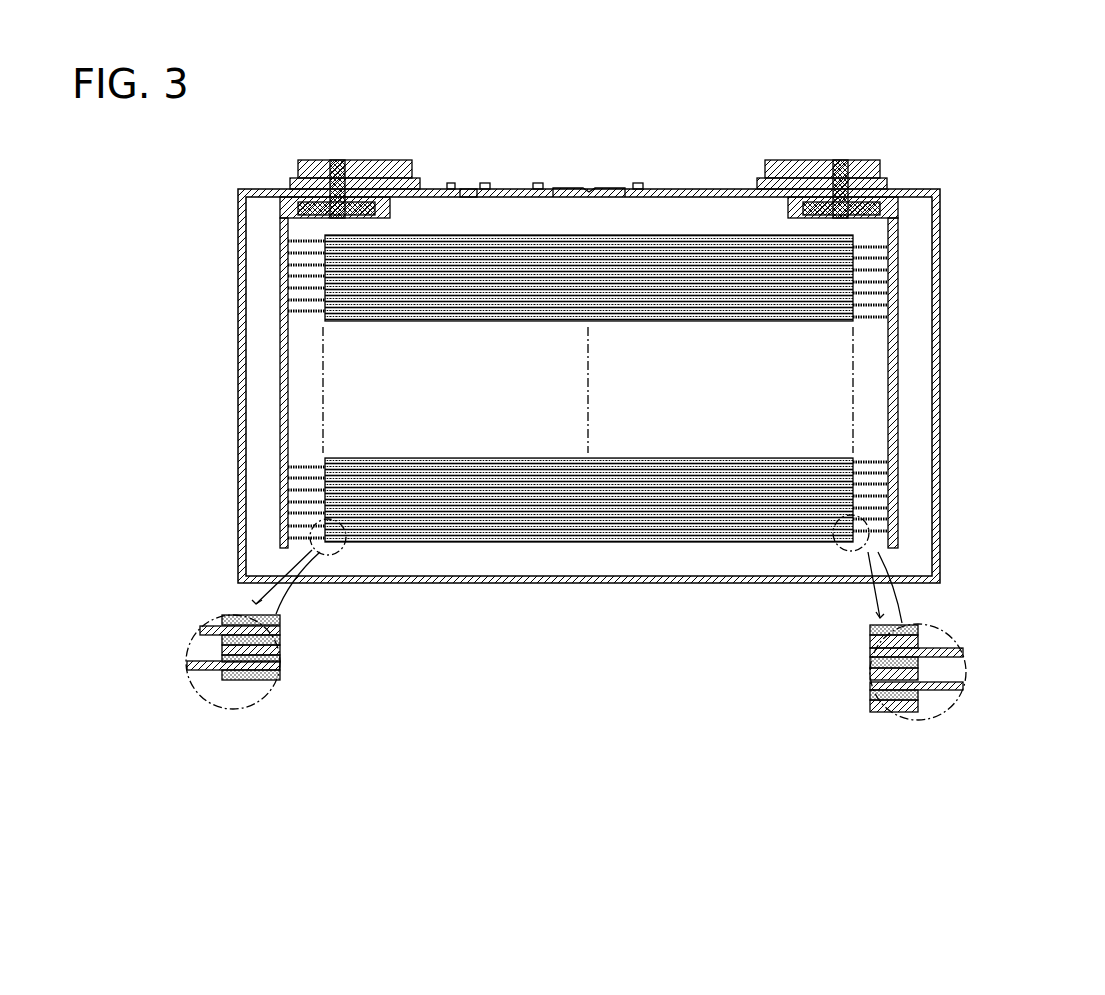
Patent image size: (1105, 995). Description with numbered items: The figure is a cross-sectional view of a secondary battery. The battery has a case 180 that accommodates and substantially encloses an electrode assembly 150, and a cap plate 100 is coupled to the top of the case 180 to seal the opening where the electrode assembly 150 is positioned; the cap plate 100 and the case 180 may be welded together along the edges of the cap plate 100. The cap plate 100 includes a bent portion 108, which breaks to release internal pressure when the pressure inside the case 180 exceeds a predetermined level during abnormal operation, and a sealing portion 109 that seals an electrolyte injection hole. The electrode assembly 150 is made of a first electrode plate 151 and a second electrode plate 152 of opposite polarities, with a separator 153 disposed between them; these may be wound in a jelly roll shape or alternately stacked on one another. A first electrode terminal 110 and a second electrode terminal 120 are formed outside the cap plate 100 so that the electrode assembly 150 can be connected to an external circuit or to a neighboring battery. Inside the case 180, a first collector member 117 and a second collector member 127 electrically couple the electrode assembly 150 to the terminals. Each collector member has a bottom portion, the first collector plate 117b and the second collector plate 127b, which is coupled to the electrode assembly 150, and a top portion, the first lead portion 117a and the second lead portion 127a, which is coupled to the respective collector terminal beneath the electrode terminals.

The cap plate 100 is at (260, 190).
The bent portion 108 is at (598, 185).
The sealing portion 109 is at (466, 185).
The first electrode terminal 110 is at (820, 141).
The first collector member 117 is at (926, 371).
The first lead portion 117a is at (895, 204).
The first collector plate 117b is at (895, 290).
The second electrode terminal 120 is at (336, 145).
The second collector member 127 is at (254, 371).
The second lead portion 127a is at (285, 204).
The second collector plate 127b is at (285, 290).
The electrode assembly 150 is at (503, 396).
The first electrode plate 151 is at (880, 512).
The second electrode plate 152 is at (300, 512).
The separator 153 is at (498, 542).
The case 180 is at (940, 383).